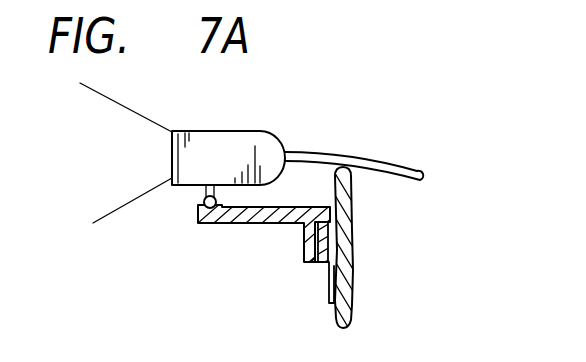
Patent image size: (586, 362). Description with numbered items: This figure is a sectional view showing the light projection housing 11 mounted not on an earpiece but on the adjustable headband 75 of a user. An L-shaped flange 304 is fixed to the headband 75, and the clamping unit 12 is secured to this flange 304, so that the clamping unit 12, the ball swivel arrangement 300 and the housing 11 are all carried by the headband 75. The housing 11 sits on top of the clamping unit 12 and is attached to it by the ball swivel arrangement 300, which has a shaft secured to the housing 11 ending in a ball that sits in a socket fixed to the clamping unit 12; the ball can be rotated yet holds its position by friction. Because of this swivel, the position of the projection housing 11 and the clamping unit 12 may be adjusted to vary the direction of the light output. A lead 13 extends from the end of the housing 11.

The light projection housing 11 is at (226, 125).
The clamping unit 12 is at (228, 226).
The lead wire 13 is at (371, 150).
The adjustable headband 75 is at (352, 193).
The ball swivel arrangement 300 is at (186, 209).
The L-shaped flange 304 is at (321, 268).